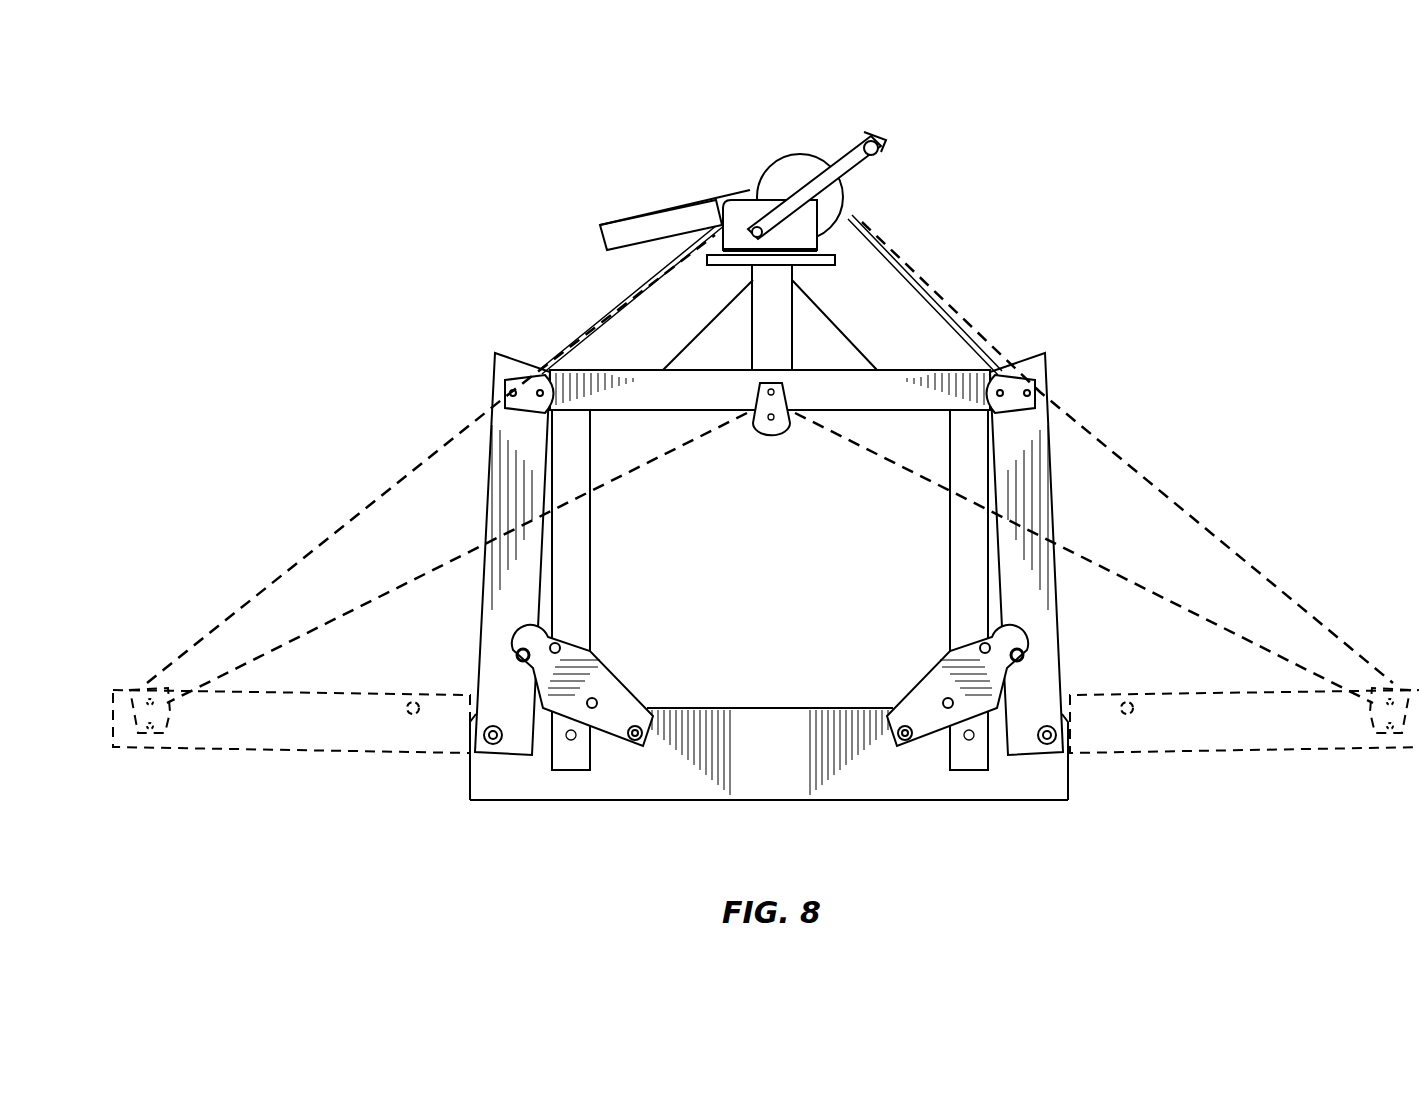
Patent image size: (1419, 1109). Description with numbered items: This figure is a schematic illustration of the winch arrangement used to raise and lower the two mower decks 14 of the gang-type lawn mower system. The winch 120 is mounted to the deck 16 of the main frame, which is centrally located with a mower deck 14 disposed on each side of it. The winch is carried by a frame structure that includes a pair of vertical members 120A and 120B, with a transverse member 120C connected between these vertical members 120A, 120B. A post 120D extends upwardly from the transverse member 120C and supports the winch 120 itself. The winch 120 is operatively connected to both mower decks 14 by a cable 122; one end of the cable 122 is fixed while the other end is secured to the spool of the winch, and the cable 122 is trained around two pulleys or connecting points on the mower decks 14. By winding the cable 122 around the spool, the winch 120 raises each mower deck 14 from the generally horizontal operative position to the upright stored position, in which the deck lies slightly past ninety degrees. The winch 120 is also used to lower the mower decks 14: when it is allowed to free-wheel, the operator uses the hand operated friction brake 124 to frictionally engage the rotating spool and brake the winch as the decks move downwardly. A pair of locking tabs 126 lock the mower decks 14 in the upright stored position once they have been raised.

The mower deck 14 is at (365, 452).
The deck 16 is at (622, 777).
The winch 120 is at (739, 149).
The vertical member 120A is at (570, 572).
The vertical member 120B is at (963, 553).
The transverse member 120C is at (842, 390).
The post 120D is at (777, 322).
The cable 122 is at (927, 280).
The hand operated friction brake 124 is at (632, 230).
The locking tab 126 is at (615, 687).